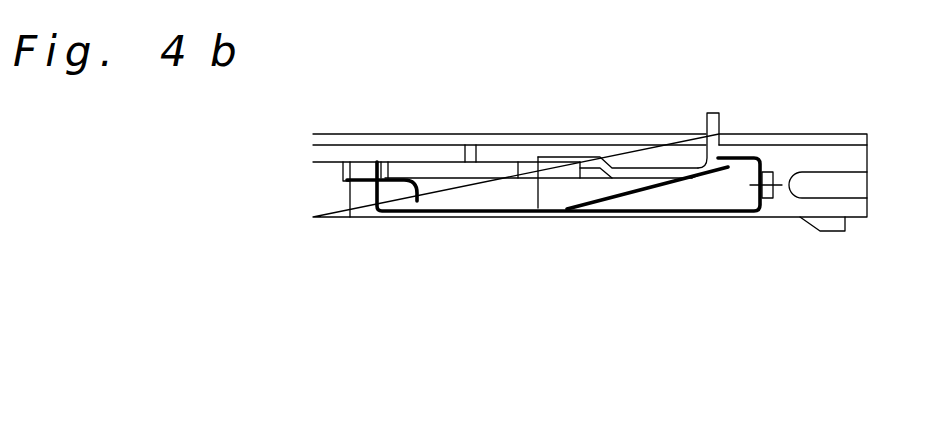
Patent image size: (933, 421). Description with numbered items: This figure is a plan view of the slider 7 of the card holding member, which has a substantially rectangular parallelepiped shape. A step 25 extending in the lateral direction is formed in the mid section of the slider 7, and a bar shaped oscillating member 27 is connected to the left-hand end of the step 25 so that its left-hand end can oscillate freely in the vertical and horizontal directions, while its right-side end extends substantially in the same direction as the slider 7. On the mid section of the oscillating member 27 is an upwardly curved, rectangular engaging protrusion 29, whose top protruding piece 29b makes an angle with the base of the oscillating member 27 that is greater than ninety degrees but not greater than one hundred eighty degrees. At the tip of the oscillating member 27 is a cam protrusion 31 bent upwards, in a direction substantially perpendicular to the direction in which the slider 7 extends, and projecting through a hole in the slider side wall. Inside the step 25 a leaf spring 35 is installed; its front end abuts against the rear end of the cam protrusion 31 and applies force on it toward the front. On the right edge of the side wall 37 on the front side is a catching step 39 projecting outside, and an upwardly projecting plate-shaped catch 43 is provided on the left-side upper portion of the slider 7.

The slider 7 is at (853, 114).
The step 25 is at (423, 198).
The oscillating member 27 is at (652, 153).
The engaging protrusion 29 is at (532, 172).
The top protruding piece 29b is at (566, 172).
The cam protrusion 31 is at (719, 117).
The leaf spring 35 is at (643, 193).
The side wall 37 is at (773, 218).
The catching step 39 is at (840, 233).
The plate-shaped catch 43 is at (363, 152).